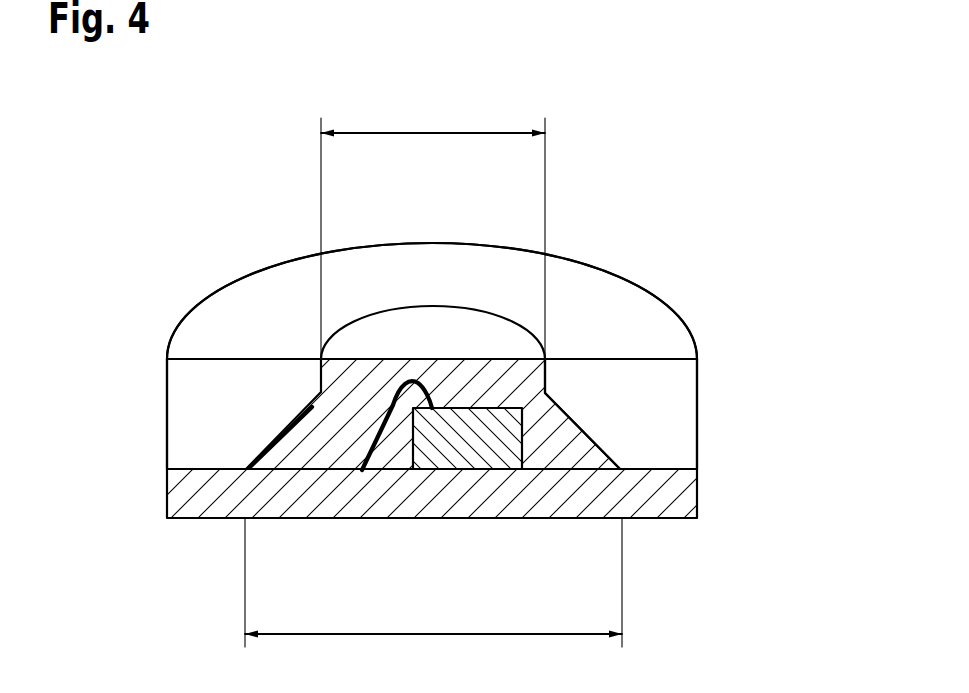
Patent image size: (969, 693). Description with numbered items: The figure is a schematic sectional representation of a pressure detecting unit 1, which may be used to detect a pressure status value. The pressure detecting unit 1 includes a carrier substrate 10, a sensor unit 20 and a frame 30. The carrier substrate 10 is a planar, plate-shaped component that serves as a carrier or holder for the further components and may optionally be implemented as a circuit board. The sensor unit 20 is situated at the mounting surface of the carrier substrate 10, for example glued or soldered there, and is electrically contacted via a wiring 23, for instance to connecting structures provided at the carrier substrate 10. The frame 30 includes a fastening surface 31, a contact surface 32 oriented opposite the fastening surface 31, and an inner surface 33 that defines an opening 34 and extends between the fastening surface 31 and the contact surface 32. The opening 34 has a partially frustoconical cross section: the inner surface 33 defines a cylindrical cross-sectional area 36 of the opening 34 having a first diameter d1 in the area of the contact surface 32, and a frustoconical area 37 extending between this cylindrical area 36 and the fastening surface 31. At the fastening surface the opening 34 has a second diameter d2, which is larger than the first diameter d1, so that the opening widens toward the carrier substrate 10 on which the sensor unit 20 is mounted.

The pressure detecting unit 1 is at (747, 143).
The carrier substrate 10 is at (683, 497).
The sensor unit 20 is at (500, 458).
The wiring 23 is at (371, 443).
The frame 30 is at (167, 413).
The fastening surface 31 is at (213, 490).
The contact surface 32 is at (243, 313).
The inner surface 33 is at (327, 422).
The opening 34 is at (446, 302).
The cylindrical cross-sectional area 36 is at (555, 376).
The frustoconical area 37 is at (604, 434).
The first diameter d1 is at (433, 133).
The second diameter d2 is at (440, 634).